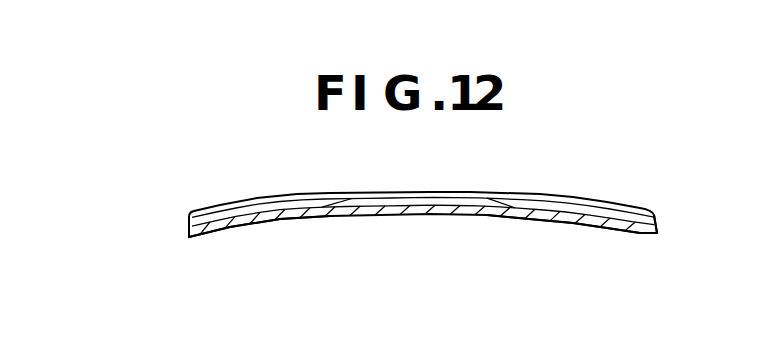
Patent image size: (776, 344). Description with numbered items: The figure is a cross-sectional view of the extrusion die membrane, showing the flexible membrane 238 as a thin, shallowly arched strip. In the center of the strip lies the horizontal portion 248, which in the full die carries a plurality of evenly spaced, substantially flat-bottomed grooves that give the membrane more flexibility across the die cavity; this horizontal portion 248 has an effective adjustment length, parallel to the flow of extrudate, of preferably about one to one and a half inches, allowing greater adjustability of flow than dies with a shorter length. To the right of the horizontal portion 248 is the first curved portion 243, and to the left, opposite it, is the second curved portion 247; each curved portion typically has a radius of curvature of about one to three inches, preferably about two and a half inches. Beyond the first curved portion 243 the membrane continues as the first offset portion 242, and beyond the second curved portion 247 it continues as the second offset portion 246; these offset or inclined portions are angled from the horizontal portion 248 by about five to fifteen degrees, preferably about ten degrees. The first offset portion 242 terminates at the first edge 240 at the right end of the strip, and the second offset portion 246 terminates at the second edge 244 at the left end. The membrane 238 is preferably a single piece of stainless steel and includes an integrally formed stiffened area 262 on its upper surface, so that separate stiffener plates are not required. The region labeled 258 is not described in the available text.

The flexible membrane 238 is at (429, 206).
The first edge 240 is at (657, 219).
The first offset portion 242 is at (569, 222).
The first curved portion 243 is at (553, 194).
The second edge 244 is at (188, 229).
The second offset portion 246 is at (242, 226).
The second curved portion 247 is at (262, 202).
The horizontal portion 248 is at (398, 216).
The middle cover layer left edge 258 is at (380, 194).
The stiffened area 262 is at (465, 194).